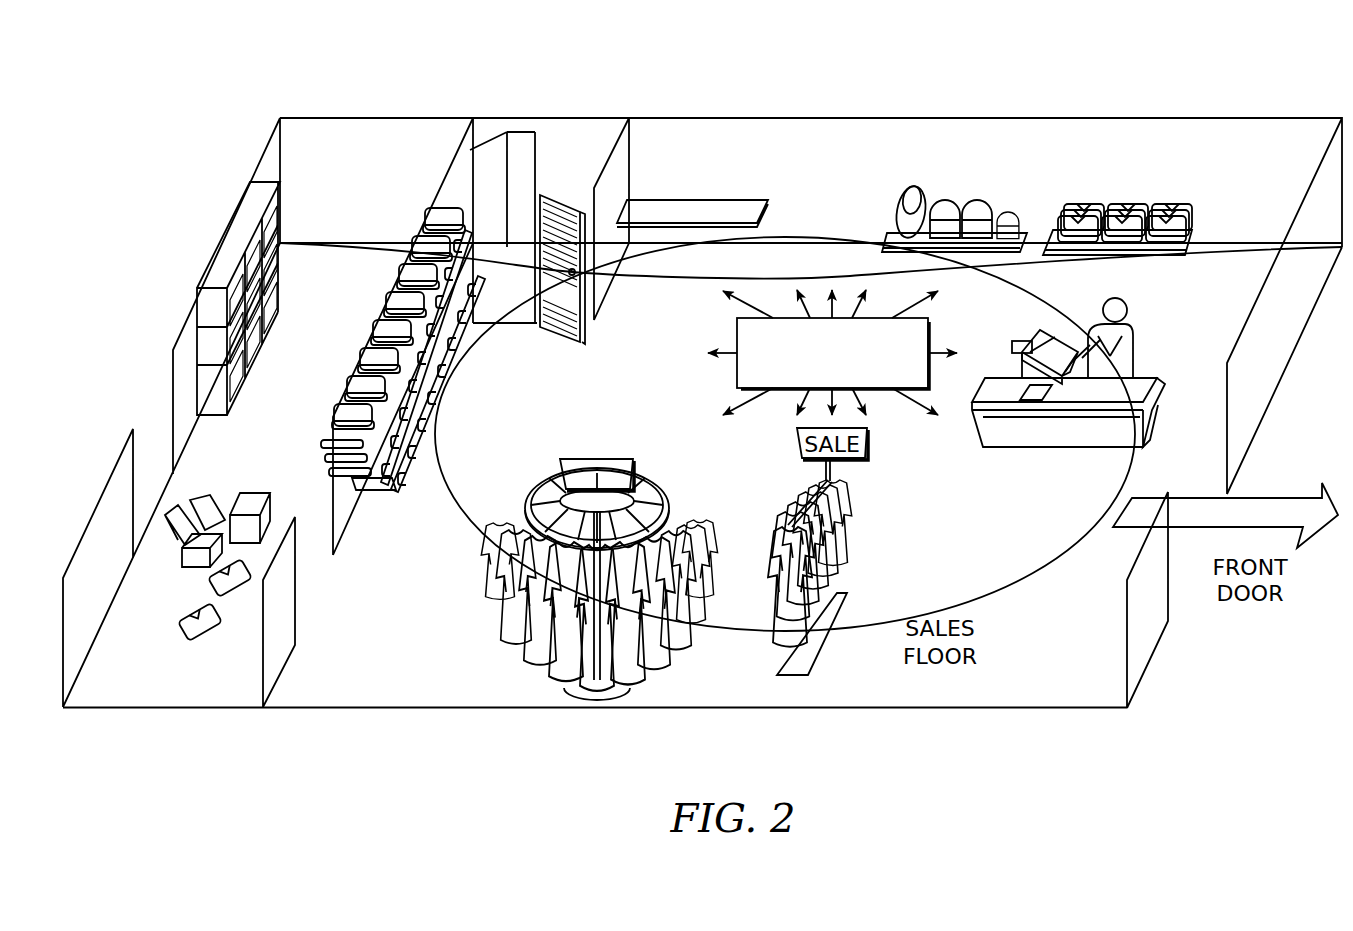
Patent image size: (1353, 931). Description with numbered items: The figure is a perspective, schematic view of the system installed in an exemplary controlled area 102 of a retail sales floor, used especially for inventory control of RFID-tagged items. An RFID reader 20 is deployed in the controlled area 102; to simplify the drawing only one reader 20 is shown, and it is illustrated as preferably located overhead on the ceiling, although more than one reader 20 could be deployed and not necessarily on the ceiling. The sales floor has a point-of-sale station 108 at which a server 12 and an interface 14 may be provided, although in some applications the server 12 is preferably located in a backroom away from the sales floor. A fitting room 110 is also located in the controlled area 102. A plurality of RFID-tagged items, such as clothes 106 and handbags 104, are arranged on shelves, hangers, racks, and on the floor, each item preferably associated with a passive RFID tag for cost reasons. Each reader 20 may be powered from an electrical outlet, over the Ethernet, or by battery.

The server 12 is at (1040, 335).
The interface 14 is at (1035, 332).
The RFID reader 20 is at (777, 392).
The controlled area 102 is at (1012, 710).
The handbags 104 is at (898, 176).
The clothes 106 is at (517, 678).
The point-of-sale station 108 is at (1164, 362).
The fitting room 110 is at (577, 140).